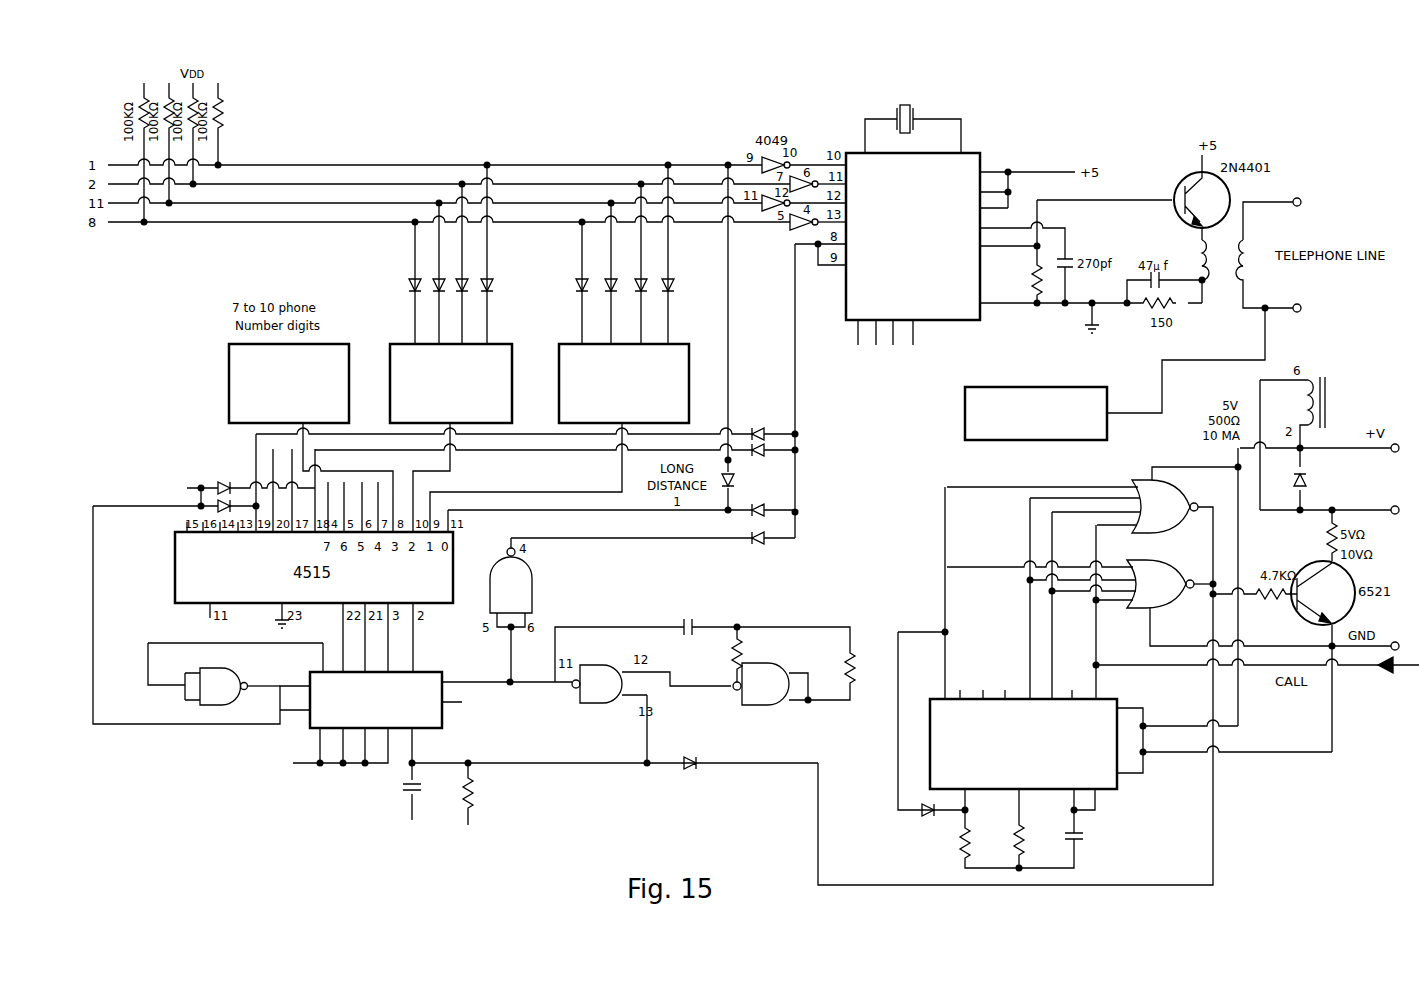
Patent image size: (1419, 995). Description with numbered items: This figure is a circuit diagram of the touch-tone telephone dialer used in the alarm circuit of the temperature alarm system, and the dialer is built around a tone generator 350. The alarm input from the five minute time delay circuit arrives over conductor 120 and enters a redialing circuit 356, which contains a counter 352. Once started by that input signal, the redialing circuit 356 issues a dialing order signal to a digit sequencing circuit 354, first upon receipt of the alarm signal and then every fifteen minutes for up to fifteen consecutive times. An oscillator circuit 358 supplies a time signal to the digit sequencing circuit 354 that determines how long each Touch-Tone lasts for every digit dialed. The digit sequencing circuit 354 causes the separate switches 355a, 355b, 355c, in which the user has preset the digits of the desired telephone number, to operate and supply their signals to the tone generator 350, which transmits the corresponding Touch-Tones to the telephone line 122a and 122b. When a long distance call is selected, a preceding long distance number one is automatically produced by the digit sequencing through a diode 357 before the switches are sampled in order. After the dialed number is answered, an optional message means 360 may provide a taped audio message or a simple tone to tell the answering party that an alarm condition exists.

The conductor 120 is at (1397, 672).
The telephone line 122a is at (1278, 200).
The telephone line 122b is at (1270, 315).
The tone generator 350 is at (955, 322).
The counter 352 is at (1118, 790).
The digit sequencing circuit 354 is at (213, 765).
The switch 355a is at (575, 322).
The switch 355b is at (403, 320).
The switch 355c is at (229, 357).
The redialing circuit 356 is at (1226, 800).
The diode 357 is at (736, 484).
The oscillator circuit 358 is at (760, 620).
The message means 360 is at (1066, 441).